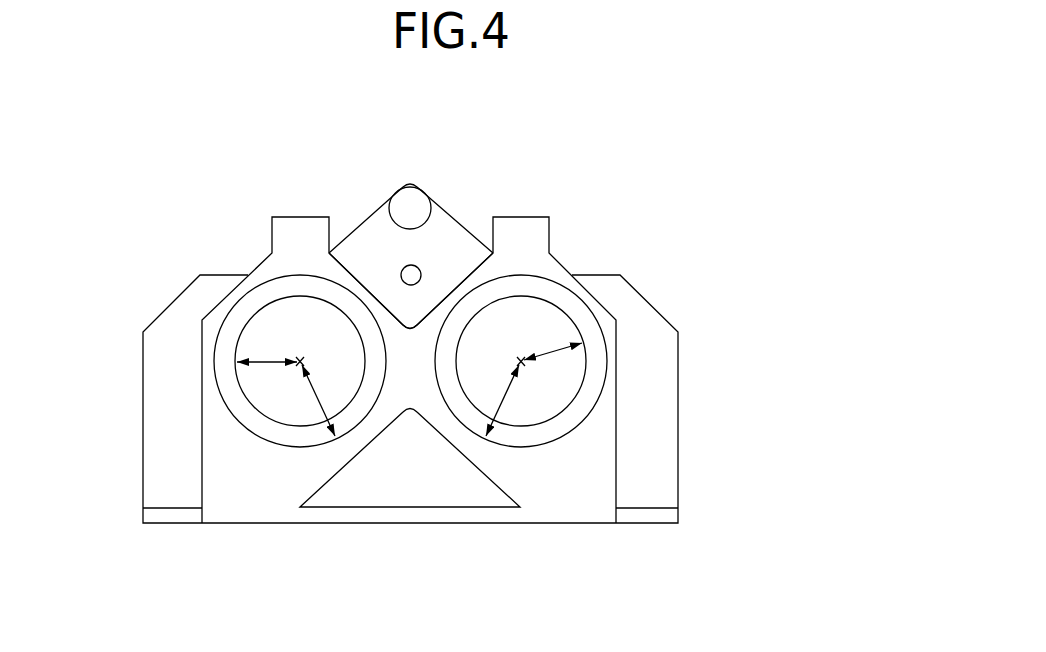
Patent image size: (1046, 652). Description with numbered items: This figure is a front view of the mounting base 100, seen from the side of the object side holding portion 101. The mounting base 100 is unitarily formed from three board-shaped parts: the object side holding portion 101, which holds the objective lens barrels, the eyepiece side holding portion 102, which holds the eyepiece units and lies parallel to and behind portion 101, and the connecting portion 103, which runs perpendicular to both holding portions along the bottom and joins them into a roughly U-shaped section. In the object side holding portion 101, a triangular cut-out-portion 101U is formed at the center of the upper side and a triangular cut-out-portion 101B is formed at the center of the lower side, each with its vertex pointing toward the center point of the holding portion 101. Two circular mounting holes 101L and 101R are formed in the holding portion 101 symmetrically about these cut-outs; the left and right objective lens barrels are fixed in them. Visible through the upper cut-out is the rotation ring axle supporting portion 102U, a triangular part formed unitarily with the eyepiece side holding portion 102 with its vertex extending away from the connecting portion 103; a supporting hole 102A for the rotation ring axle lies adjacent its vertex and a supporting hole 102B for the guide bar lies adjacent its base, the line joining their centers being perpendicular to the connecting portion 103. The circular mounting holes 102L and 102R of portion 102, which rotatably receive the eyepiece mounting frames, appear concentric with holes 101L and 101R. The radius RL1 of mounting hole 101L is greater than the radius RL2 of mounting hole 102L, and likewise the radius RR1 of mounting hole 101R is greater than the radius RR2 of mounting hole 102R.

The mounting base 100 is at (643, 232).
The object side holding portion 101 is at (621, 446).
The mounting hole 101R is at (278, 284).
The mounting hole 101L is at (536, 284).
The cut-out-portion 101U is at (372, 278).
The cut-out-portion 101B is at (412, 476).
The eyepiece side holding portion 102 is at (684, 372).
The rotation ring axle supporting portion 102U is at (369, 220).
The supporting hole 102A is at (412, 192).
The supporting hole 102B is at (414, 276).
The mounting hole 102R is at (268, 408).
The mounting hole 102L is at (552, 408).
The connecting portion 103 is at (678, 512).
The radius of the mounting hole 101R RR1 is at (329, 390).
The radius of the mounting hole 102R RR2 is at (269, 348).
The radius of the mounting hole 101L RL1 is at (494, 390).
The radius of the mounting hole 102L RL2 is at (547, 339).